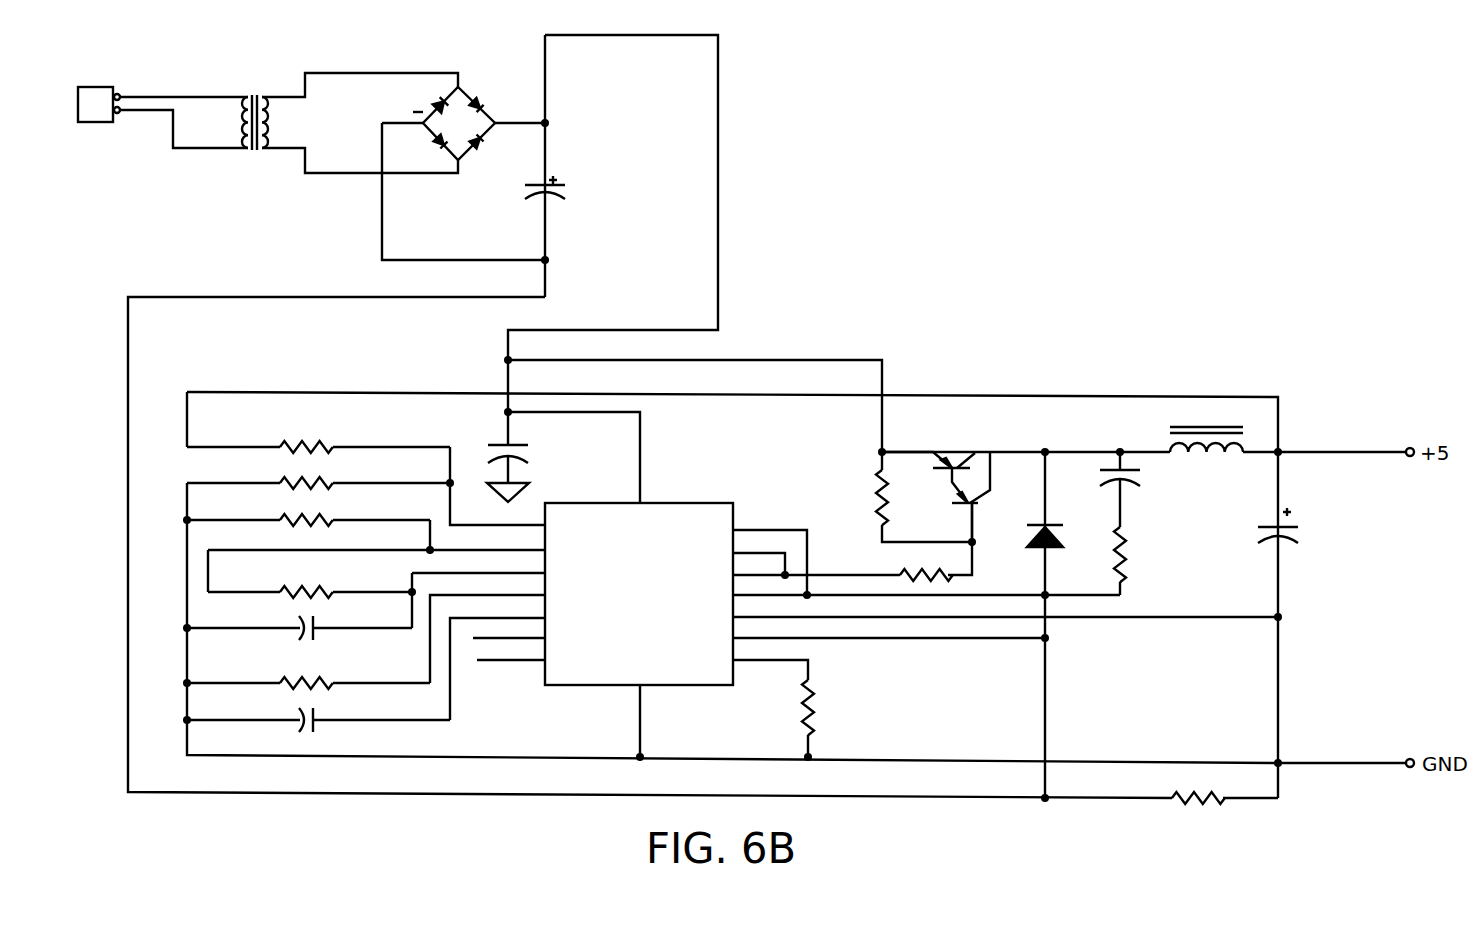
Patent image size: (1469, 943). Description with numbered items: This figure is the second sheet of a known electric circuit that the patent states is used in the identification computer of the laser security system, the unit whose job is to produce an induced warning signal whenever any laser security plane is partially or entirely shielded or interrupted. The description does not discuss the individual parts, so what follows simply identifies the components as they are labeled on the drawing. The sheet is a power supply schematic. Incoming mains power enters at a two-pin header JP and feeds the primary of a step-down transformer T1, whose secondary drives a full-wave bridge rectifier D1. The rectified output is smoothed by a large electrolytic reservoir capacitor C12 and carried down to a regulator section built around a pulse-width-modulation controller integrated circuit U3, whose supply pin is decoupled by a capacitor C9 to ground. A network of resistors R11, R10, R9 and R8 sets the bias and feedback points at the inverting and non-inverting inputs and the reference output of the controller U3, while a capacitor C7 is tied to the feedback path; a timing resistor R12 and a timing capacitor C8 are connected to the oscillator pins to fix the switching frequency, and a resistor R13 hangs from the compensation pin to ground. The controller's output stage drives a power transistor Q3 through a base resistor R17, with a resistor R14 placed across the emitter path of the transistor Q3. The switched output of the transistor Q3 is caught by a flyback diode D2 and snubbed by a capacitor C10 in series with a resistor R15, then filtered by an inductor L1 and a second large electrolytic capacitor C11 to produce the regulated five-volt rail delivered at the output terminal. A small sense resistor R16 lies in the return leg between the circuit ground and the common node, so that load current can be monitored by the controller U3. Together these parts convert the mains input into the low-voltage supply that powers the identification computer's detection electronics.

The 2-pin header JP? (HEADER 2) JP is at (157, 104).
The transformer 220:20 T1 is at (340, 128).
The bridge rectifier D1 is at (463, 150).
The capacitor 4700UF C12 is at (582, 195).
The capacitor 100UF C9 is at (547, 464).
The PWM controller 3524 U3 is at (641, 590).
The resistor 10K R11 is at (318, 438).
The resistor 10K R10 is at (318, 474).
The resistor 10K R9 is at (308, 511).
The resistor 10K R8 is at (310, 583).
The capacitor 0.1 C7 is at (299, 622).
The resistor 3K R12 is at (308, 674).
The capacitor 0.01 C8 is at (318, 714).
The resistor 47K R13 is at (832, 706).
The resistor 0.66K R14 is at (885, 497).
The transistor TIP127 Q3 is at (936, 472).
The resistor 3K R17 is at (910, 566).
The diode PS154 D2 is at (1069, 506).
The capacitor 0.01 C10 is at (1145, 489).
The resistor 4.7 R15 is at (1143, 558).
The inductor 20KHz L1 is at (1189, 426).
The capacitor 1000UF C11 is at (1323, 521).
The resistor 0.1 R16 is at (1192, 788).